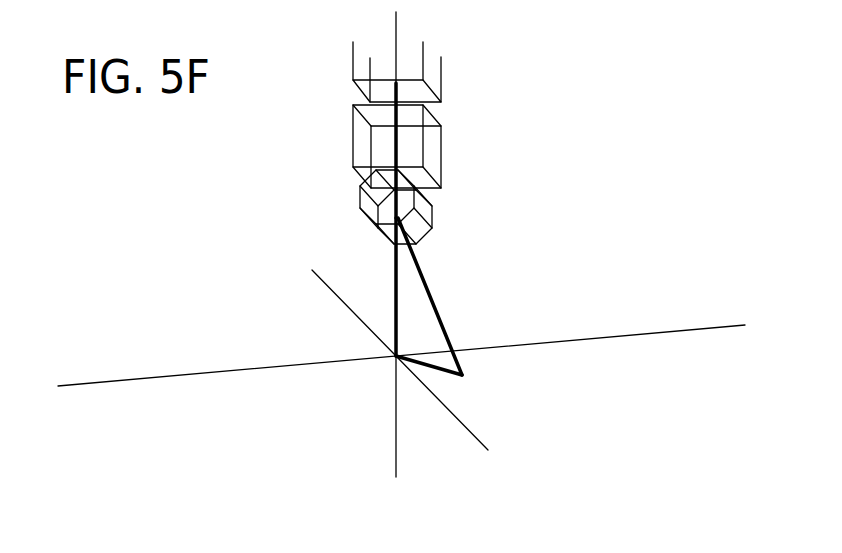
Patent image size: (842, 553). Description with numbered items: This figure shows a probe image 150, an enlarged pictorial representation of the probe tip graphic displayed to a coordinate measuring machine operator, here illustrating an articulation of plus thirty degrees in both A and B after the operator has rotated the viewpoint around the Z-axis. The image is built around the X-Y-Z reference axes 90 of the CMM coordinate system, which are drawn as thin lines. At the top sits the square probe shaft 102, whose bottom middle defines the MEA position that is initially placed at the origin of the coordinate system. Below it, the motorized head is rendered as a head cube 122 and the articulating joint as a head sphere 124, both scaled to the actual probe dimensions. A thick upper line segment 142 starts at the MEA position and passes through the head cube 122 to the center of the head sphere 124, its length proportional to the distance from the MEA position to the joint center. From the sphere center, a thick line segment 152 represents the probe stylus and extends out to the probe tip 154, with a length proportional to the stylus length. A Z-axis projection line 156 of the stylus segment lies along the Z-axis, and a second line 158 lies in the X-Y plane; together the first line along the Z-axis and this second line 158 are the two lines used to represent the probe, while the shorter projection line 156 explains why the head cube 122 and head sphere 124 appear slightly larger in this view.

The X-Y-Z reference axes 90 is at (240, 370).
The probe shaft 102 is at (352, 80).
The head cube 122 is at (357, 135).
The head sphere 124 is at (362, 203).
The upper line segment 142 is at (398, 147).
The probe image 150 is at (614, 160).
The line segment 152 is at (433, 292).
The probe tip 154 is at (465, 373).
The Z-axis projection line 156 is at (396, 287).
The second line 158 is at (433, 372).